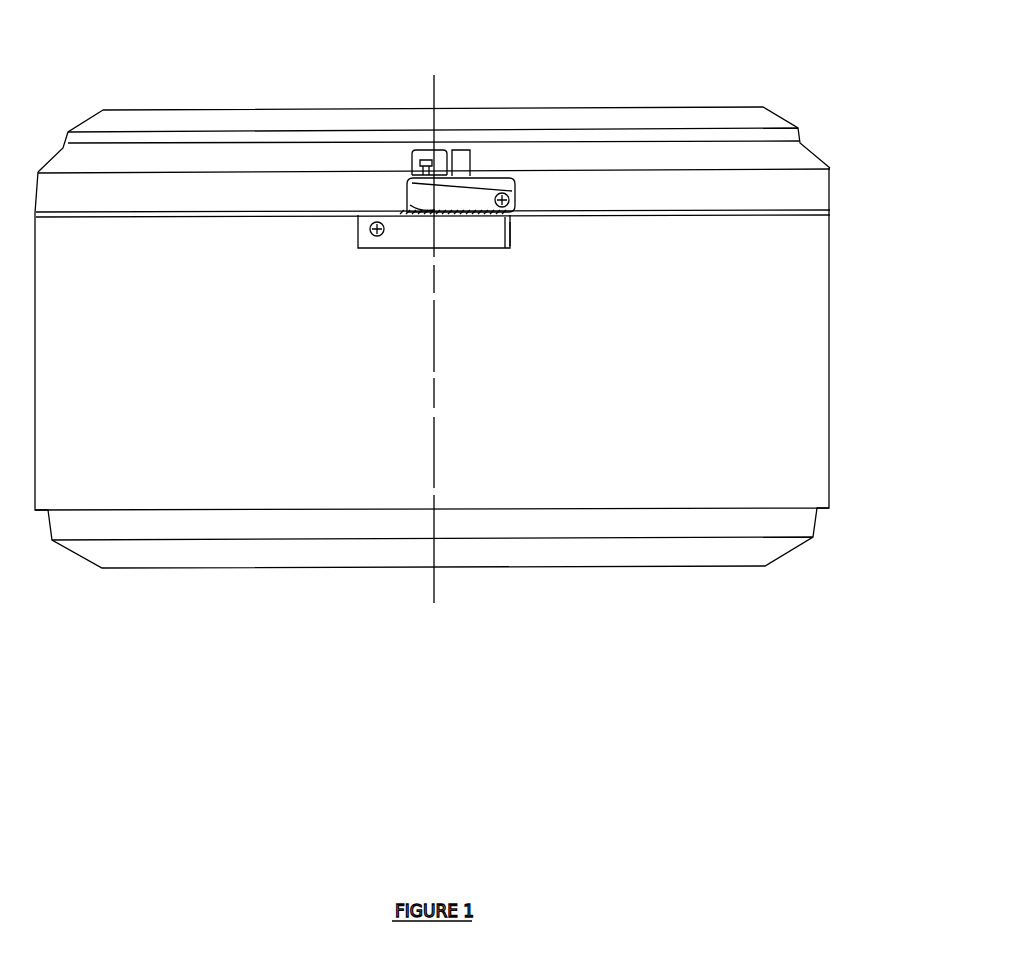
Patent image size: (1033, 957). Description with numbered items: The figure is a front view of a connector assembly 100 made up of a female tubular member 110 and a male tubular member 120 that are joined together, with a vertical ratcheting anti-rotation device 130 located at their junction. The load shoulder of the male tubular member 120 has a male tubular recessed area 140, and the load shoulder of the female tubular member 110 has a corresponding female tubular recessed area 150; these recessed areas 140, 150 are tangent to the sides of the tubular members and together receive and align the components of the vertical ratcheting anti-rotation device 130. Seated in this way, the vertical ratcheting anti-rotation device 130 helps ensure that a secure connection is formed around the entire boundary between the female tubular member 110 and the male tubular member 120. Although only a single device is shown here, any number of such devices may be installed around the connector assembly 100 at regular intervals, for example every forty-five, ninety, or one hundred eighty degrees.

The connector assembly 100 is at (115, 722).
The female tubular member 110 is at (832, 280).
The male tubular member 120 is at (783, 118).
The vertical ratcheting anti-rotation device 130 is at (402, 235).
The male tubular recessed area 140 is at (490, 183).
The female tubular recessed area 150 is at (510, 235).